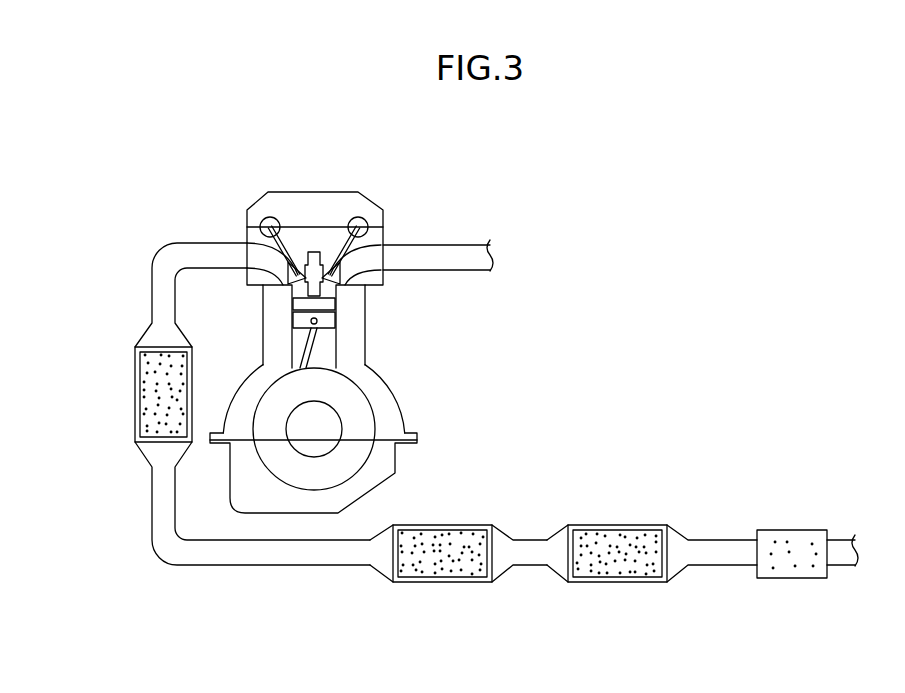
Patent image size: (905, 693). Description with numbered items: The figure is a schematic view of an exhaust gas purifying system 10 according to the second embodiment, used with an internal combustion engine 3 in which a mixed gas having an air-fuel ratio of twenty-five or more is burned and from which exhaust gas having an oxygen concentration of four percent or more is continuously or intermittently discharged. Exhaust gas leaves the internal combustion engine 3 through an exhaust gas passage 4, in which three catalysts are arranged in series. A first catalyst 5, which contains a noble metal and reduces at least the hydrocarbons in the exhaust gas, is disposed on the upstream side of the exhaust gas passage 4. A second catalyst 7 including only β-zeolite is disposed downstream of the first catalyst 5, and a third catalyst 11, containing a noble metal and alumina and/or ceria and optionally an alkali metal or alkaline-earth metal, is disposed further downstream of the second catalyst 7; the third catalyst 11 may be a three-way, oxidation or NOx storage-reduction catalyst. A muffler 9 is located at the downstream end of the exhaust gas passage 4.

The exhaust gas purifying system 10 is at (139, 172).
The internal combustion engine 3 is at (366, 334).
The exhaust gas passage 4 is at (162, 262).
The first catalyst 5 is at (135, 385).
The second catalyst 7 is at (438, 583).
The third catalyst 11 is at (614, 583).
The muffler 9 is at (793, 530).